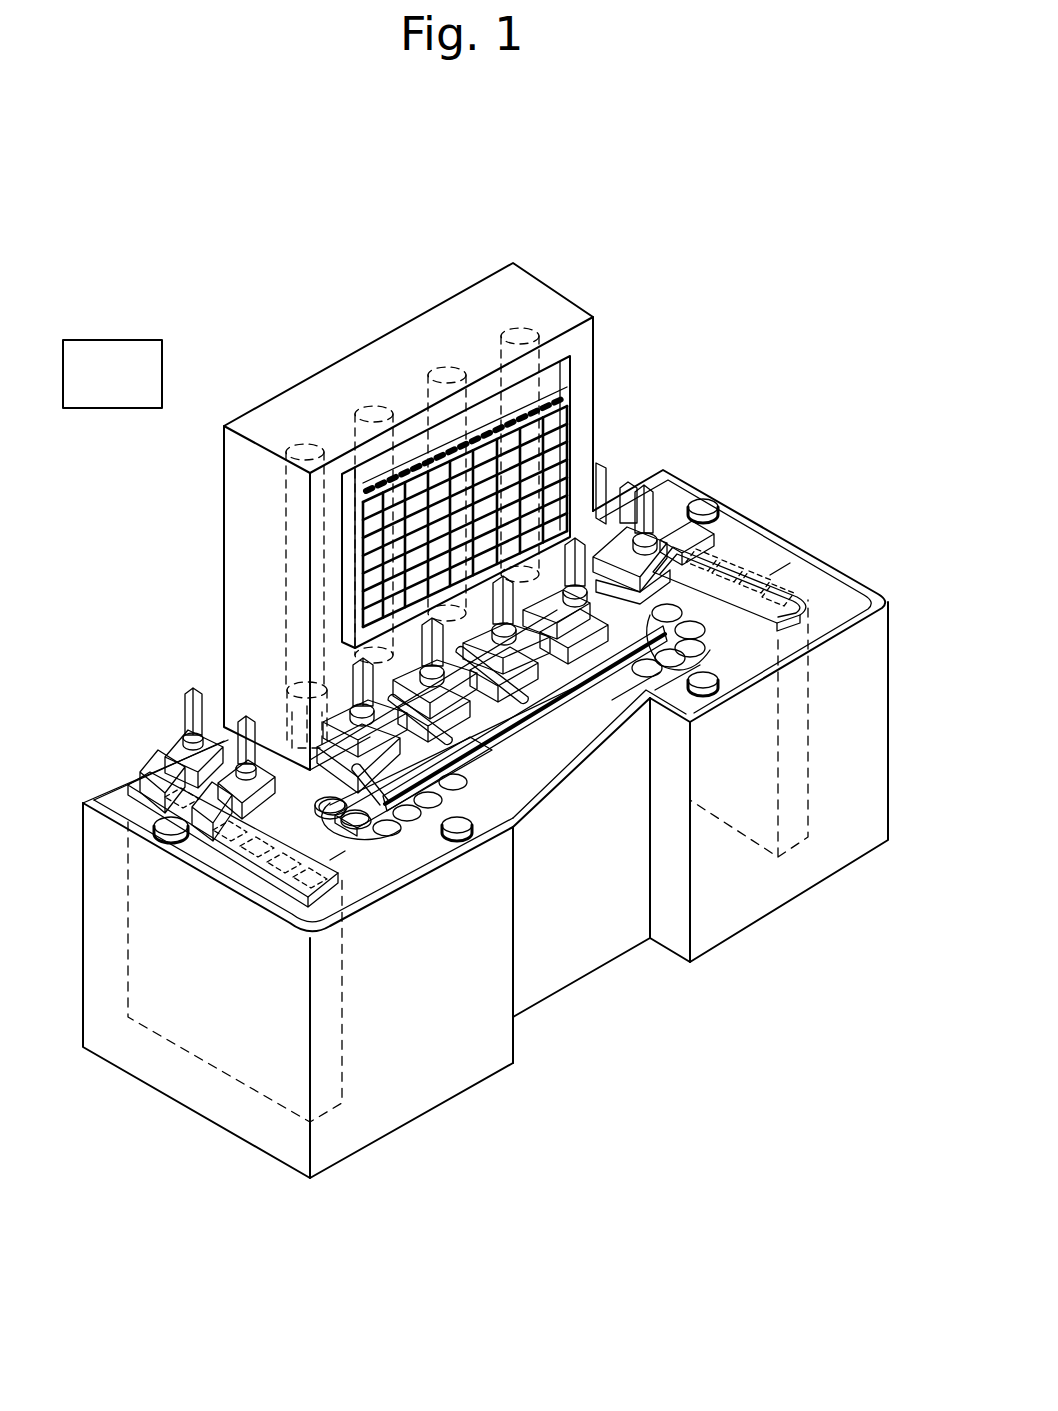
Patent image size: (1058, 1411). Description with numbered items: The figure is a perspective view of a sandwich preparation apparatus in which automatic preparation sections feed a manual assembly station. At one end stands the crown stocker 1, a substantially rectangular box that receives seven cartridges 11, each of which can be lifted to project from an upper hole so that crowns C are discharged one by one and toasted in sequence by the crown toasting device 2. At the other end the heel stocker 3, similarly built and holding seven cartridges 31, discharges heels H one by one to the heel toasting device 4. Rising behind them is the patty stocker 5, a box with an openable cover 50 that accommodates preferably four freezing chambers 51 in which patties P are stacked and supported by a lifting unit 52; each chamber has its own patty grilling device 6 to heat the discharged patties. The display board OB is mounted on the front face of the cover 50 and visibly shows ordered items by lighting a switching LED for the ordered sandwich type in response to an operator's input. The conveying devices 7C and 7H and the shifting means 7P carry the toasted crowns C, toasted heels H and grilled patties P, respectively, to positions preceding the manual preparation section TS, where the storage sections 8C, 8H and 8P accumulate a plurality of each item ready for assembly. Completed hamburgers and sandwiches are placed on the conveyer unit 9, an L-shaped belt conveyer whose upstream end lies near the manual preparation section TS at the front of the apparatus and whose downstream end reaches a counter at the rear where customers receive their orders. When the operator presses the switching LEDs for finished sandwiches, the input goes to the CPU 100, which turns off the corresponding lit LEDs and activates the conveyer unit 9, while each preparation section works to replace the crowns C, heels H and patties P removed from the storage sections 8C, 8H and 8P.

The crown stocker 1 is at (795, 830).
The crown toasting device 2 is at (612, 497).
The heel stocker 3 is at (153, 960).
The heel toasting device 4 is at (232, 760).
The patty stocker 5 is at (380, 366).
The patty grilling device 6 is at (343, 717).
The conveying device 7C is at (712, 553).
The conveying device 7H is at (300, 788).
The shifting means 7P is at (447, 812).
The storage section 8C is at (711, 633).
The storage section 8H is at (333, 812).
The storage section 8P is at (557, 727).
The conveyer unit 9 is at (780, 560).
The cartridge 11 is at (677, 517).
The cartridge 31 is at (165, 803).
The openable cover 50 is at (565, 358).
The freezing chamber 51 is at (360, 412).
The lifting unit 52 is at (280, 703).
The CPU 100 is at (147, 340).
The display board OB is at (580, 405).
The manual preparation section TS is at (593, 700).
The crown C is at (635, 683).
The heel H is at (400, 847).
The patty P is at (483, 808).